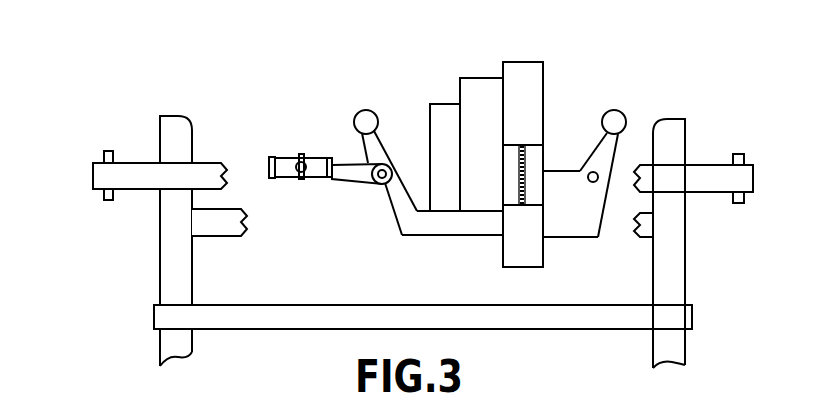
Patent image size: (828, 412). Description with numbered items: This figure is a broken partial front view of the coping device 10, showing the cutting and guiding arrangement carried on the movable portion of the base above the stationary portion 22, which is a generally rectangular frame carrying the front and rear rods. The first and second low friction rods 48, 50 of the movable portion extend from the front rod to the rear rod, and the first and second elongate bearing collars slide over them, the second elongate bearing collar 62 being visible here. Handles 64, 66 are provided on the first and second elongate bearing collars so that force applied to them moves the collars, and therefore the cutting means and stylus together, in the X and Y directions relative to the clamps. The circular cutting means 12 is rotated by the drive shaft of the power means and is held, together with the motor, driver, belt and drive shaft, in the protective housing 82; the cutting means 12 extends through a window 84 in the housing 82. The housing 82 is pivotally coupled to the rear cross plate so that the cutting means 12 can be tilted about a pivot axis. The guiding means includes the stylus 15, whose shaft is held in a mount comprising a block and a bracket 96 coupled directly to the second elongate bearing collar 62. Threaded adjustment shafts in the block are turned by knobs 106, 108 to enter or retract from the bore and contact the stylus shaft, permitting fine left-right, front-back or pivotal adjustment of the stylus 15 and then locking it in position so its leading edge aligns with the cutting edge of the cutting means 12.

The coping device 10 is at (118, 117).
The stationary portion 22 is at (680, 132).
The protective housing 82 is at (482, 83).
The window 84 is at (537, 158).
The circular cutting means 12 is at (522, 178).
The second elongate bearing collar 62 is at (389, 163).
The handle 66 is at (363, 110).
The bracket 96 is at (360, 179).
The second low friction rod 50 is at (381, 186).
The knob 106 is at (268, 164).
The knob 108 is at (328, 157).
The stylus 15 is at (300, 180).
The handle 64 is at (619, 114).
The first low friction rod 48 is at (592, 183).